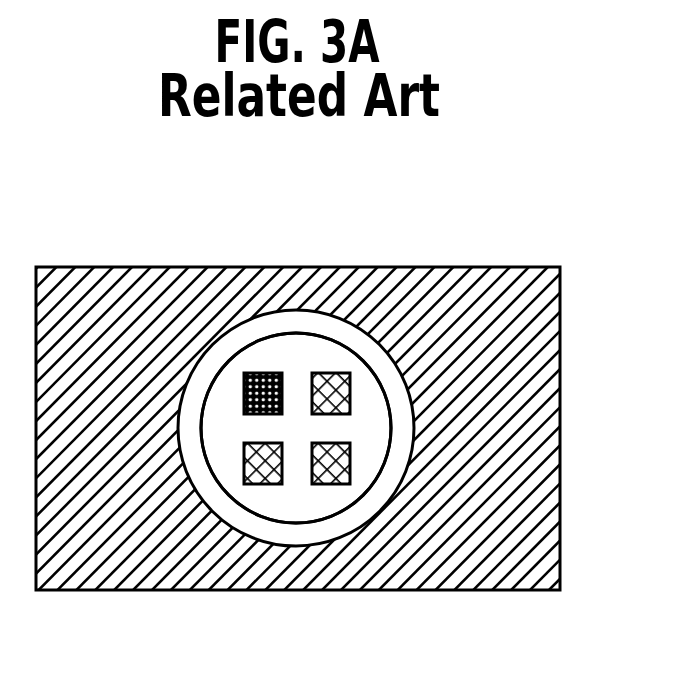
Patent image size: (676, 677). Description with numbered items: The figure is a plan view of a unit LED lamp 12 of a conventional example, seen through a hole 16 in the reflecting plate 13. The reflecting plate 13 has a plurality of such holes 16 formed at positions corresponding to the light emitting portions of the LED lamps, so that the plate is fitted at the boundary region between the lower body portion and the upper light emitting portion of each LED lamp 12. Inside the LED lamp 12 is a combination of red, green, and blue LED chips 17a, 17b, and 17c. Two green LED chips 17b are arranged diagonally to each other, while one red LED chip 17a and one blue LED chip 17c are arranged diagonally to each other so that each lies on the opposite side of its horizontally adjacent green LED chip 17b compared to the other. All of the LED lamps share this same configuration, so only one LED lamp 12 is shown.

The reflecting plate 13 is at (210, 278).
The holes 16 is at (268, 325).
The LED lamp 12 is at (323, 343).
The red LED chip 17a is at (243, 388).
The green LED chips 17b is at (244, 458).
The blue LED chip 17c is at (350, 458).